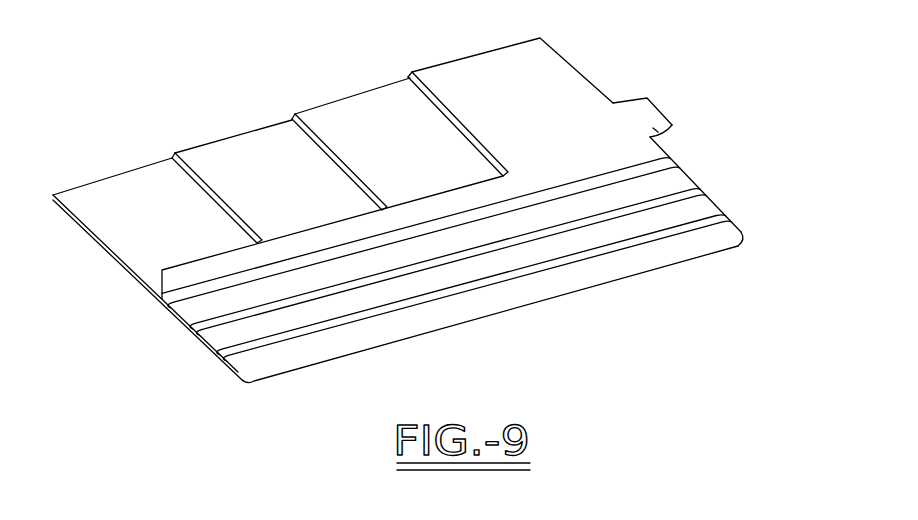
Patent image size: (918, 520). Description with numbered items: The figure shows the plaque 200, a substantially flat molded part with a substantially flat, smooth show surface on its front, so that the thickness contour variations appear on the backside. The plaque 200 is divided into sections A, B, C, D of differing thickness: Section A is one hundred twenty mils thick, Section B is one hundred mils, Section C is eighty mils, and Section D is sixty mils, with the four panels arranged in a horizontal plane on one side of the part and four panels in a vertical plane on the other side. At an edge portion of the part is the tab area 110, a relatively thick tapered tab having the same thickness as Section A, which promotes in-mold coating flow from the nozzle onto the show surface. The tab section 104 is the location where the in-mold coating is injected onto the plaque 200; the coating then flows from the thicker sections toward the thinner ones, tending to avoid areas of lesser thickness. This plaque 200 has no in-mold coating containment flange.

The Section A is at (592, 122).
The Section B is at (360, 110).
The Section C is at (248, 148).
The Section D is at (123, 187).
The tab area 110 is at (662, 108).
The tab section 104 is at (673, 138).
The plaque 200 is at (427, 198).